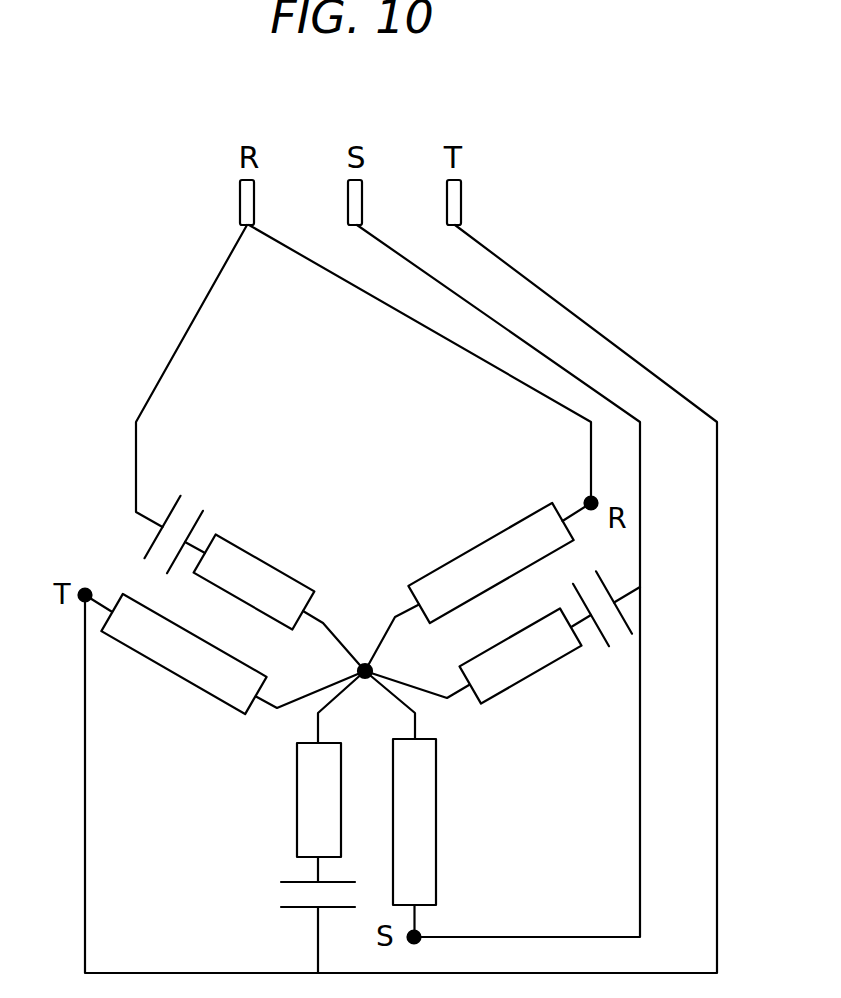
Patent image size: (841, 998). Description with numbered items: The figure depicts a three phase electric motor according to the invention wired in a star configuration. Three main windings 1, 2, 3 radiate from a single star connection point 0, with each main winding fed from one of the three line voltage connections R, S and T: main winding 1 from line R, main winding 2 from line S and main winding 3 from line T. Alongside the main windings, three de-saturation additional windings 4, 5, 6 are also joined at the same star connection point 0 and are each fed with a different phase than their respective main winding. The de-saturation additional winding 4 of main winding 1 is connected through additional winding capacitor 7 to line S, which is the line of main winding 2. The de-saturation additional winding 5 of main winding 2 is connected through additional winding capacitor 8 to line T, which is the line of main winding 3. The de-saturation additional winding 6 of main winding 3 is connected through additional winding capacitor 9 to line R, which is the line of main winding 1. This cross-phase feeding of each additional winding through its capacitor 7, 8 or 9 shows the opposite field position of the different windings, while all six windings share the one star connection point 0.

The star connection point 0 is at (362, 674).
The main winding 1 is at (490, 563).
The main winding 2 is at (435, 838).
The main winding 3 is at (183, 654).
The de-saturation additional winding 4 is at (521, 653).
The de-saturation additional winding 5 is at (300, 812).
The de-saturation additional winding 6 is at (254, 585).
The additional winding capacitor 7 is at (593, 599).
The additional winding capacitor 8 is at (298, 927).
The additional winding capacitor 9 is at (184, 524).